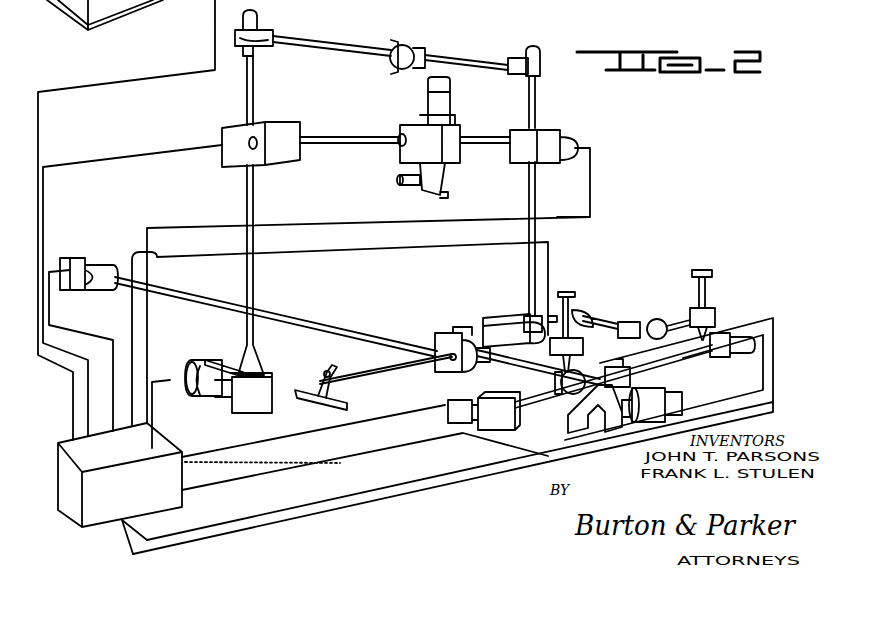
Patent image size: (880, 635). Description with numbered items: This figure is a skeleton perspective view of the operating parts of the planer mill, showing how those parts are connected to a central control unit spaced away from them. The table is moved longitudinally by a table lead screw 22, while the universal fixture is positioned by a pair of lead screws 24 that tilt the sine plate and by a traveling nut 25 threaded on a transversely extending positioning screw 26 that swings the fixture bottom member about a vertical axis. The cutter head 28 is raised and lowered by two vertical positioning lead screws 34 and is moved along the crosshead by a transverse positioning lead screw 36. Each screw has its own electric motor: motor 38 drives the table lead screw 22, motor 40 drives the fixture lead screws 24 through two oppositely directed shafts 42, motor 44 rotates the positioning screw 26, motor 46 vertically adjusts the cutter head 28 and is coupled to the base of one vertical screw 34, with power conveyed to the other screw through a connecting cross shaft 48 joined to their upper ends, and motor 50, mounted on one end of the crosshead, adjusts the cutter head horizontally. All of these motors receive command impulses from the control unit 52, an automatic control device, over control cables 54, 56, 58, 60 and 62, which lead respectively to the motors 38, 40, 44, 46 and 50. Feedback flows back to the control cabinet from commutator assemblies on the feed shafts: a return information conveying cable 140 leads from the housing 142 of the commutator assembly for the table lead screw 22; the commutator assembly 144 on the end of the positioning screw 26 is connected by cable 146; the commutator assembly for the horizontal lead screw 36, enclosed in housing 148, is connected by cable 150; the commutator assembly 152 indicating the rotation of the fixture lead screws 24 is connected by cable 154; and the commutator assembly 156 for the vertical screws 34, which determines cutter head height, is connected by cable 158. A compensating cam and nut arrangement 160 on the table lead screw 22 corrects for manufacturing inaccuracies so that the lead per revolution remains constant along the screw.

The table lead screw 22 is at (347, 332).
The lead screws 24 is at (570, 308).
The traveling nut 25 is at (625, 367).
The positioning screw 26 is at (613, 393).
The cutter head 28 is at (452, 142).
The vertical positioning lead screws 34 is at (252, 215).
The transverse positioning lead screw 36 is at (380, 143).
The motor 38 is at (662, 397).
The motor 40 is at (592, 315).
The shafts 42 is at (617, 343).
The motor 44 is at (448, 410).
The motor 46 is at (200, 398).
The connecting cross shaft 48 is at (355, 48).
The motor 50 is at (567, 147).
The control unit 52 is at (155, 489).
The control cable 54 is at (363, 458).
The control cable 56 is at (412, 250).
The control cable 58 is at (310, 433).
The control cable 60 is at (170, 380).
The control cable 62 is at (373, 223).
The return information conveying cable 140 is at (87, 333).
The housing 142 is at (78, 268).
The commutator assembly 144 is at (733, 354).
The cable 146 is at (483, 480).
The housing 148 is at (232, 137).
The cable 150 is at (198, 150).
The commutator assembly 152 is at (660, 318).
The cable 154 is at (497, 497).
The commutator assembly 156 is at (257, 20).
The cable 158 is at (175, 78).
The compensating means 160 is at (317, 366).